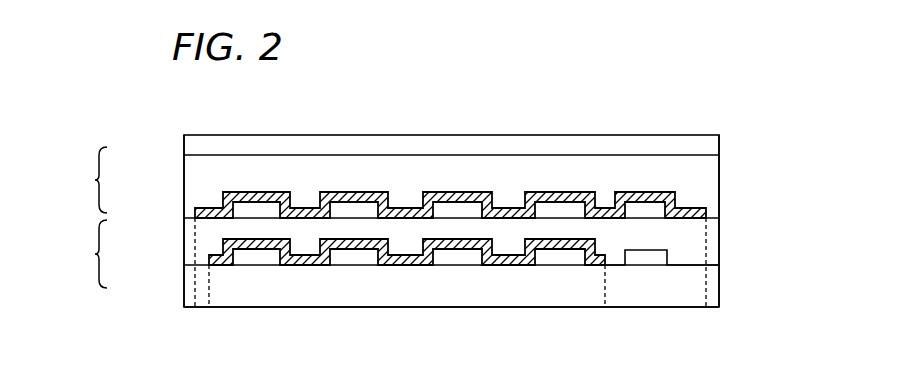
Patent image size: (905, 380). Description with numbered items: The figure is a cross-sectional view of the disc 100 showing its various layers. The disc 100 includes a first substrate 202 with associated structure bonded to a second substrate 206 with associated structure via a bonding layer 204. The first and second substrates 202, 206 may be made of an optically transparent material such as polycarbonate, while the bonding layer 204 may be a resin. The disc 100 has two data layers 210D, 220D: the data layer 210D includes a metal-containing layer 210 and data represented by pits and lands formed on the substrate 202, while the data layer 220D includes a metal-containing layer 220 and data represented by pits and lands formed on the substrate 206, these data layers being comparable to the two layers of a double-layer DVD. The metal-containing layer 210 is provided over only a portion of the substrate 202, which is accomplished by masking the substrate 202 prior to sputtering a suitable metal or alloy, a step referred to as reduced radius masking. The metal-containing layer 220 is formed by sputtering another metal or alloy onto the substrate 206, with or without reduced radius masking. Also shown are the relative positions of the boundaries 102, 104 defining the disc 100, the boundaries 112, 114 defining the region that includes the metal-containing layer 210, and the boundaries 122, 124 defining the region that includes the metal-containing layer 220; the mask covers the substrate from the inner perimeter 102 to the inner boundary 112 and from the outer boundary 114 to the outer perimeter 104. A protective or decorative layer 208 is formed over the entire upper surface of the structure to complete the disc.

The disc 100 is at (451, 177).
The protective or decorative layer 208 is at (451, 111).
The second substrate 206 is at (481, 189).
The bonding layer 204 is at (481, 243).
The first substrate 202 is at (481, 292).
The metal-containing layer 220 is at (410, 202).
The metal-containing layer 210 is at (417, 249).
The data layer 220D is at (76, 180).
The data layer 210D is at (76, 254).
The boundary 102 is at (161, 256).
The boundary 122 is at (195, 298).
The boundary 112 is at (232, 321).
The boundary 114 is at (595, 321).
The boundary 124 is at (690, 298).
The boundary 104 is at (736, 256).